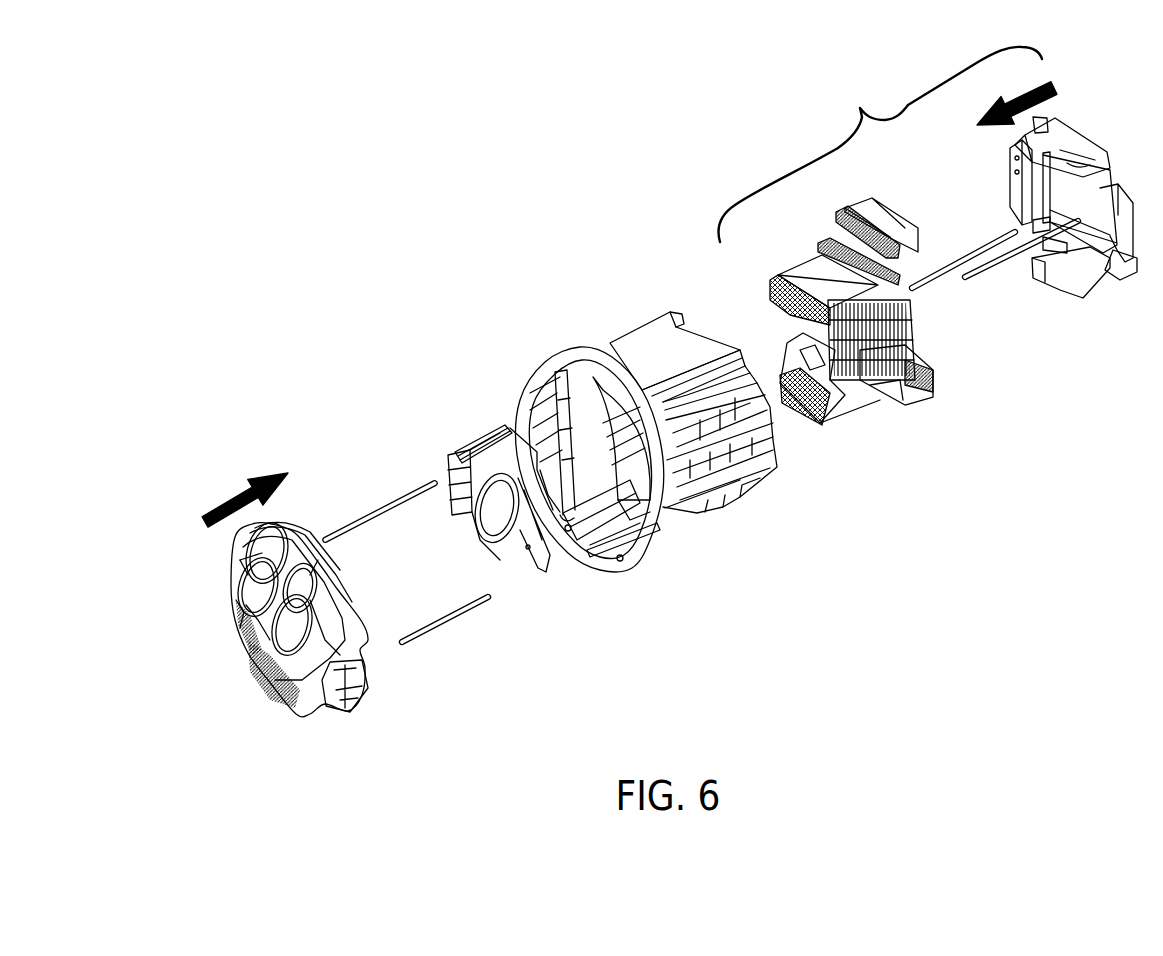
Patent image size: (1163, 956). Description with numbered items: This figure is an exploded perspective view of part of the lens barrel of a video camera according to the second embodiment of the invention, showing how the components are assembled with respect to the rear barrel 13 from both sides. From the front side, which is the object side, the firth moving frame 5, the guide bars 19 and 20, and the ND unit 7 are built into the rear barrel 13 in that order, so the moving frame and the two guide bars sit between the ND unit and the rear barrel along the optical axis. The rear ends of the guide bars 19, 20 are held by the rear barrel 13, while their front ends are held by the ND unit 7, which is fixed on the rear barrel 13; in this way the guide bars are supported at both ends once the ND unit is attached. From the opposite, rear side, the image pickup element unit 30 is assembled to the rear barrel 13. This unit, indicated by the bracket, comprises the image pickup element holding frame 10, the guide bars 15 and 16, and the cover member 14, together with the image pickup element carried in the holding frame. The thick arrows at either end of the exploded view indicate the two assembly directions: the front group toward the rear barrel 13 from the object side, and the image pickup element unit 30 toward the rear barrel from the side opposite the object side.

The firth moving frame 5 is at (476, 473).
The ND unit 7 is at (337, 655).
The image pickup element holding frame 10 is at (877, 403).
The rear barrel 13 is at (710, 500).
The cover member 14 is at (1108, 285).
The guide bar 15 is at (1003, 262).
The guide bar 16 is at (944, 265).
The guide bar 19 is at (363, 512).
The guide bar 20 is at (447, 625).
The image pickup element unit 30 is at (880, 144).